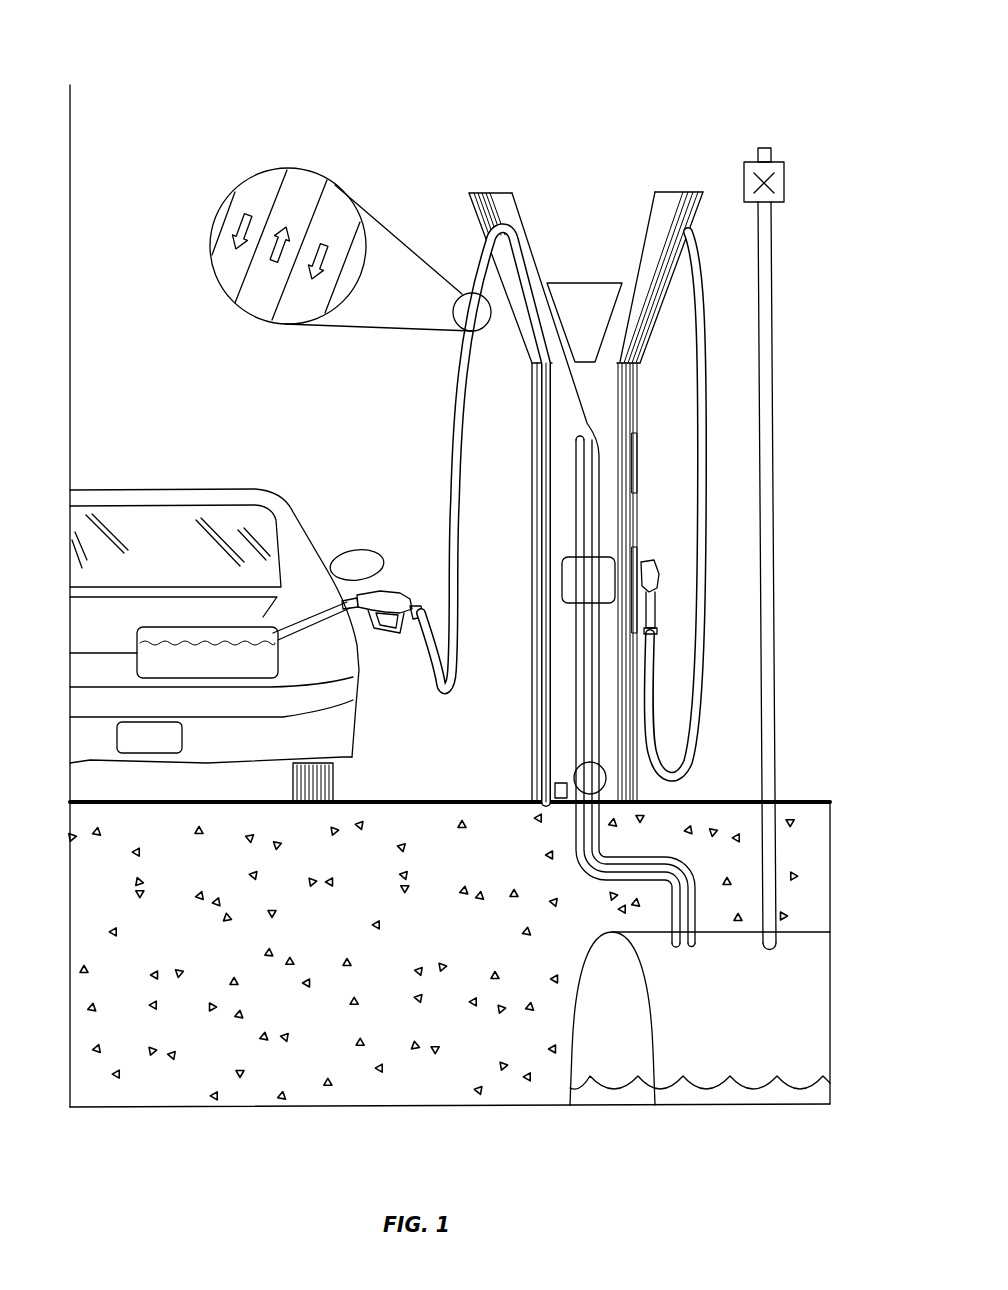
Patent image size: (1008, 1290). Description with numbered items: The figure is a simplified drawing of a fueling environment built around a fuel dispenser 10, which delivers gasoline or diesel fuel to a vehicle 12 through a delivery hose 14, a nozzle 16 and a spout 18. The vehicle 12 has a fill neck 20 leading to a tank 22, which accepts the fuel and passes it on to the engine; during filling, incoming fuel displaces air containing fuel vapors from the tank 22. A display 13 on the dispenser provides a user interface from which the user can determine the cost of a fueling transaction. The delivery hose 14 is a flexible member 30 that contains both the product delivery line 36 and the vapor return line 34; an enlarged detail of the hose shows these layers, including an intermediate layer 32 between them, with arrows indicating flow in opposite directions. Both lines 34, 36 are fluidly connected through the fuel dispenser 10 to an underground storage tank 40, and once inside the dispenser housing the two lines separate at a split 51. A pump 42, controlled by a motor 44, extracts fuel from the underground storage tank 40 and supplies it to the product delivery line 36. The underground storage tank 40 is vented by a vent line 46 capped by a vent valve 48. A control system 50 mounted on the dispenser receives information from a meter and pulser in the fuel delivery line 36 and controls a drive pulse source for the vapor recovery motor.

The fuel dispenser 10 is at (566, 82).
The vehicle 12 is at (160, 553).
The display 13 is at (533, 472).
The delivery hose 14 is at (454, 494).
The nozzle 16 is at (407, 597).
The spout 18 is at (349, 600).
The fill neck 20 is at (320, 604).
The tank 22 is at (256, 671).
The flexible member 30 is at (232, 192).
The inner hose layer 32 is at (275, 203).
The vapor return line 34 is at (597, 680).
The product delivery line 36 is at (583, 723).
The underground storage tank 40 is at (768, 1026).
The pump 42 is at (574, 765).
The motor 44 is at (555, 784).
The vent line 46 is at (773, 450).
The vent valve 48 is at (783, 163).
The control system 50 is at (568, 573).
The split 51 is at (587, 440).